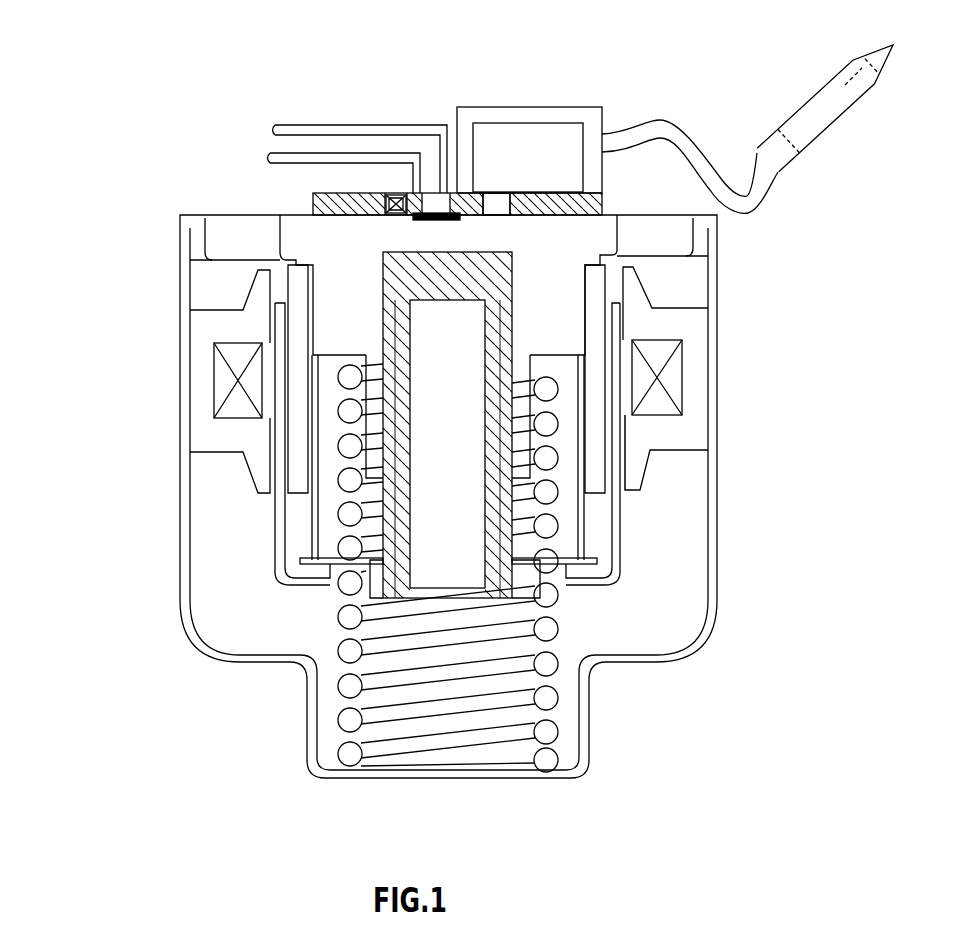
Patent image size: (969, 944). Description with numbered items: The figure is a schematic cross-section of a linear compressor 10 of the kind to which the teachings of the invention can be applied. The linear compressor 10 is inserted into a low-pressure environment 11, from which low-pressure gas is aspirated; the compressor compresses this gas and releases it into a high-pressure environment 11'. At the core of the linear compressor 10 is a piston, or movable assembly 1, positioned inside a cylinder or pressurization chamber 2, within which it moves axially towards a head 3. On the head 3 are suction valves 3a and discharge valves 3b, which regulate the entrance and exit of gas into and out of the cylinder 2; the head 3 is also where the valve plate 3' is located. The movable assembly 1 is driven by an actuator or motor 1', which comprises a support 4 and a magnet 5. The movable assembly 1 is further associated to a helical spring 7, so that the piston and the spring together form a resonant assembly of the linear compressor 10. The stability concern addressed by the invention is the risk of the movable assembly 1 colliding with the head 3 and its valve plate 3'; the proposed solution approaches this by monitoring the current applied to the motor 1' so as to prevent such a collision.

The piston 1 is at (315, 405).
The motor 1' is at (723, 510).
The cylinder 2 is at (318, 240).
The head 3 is at (457, 107).
The suction valves 3a is at (403, 193).
The discharge valves 3b is at (488, 193).
The valve plate 3' is at (723, 107).
The support 4 is at (657, 423).
The magnet 5 is at (610, 370).
The helical spring 7 is at (537, 627).
The linear compressor 10 is at (744, 337).
The low-pressure environment 11 is at (323, 159).
The high-pressure environment 11' is at (529, 150).